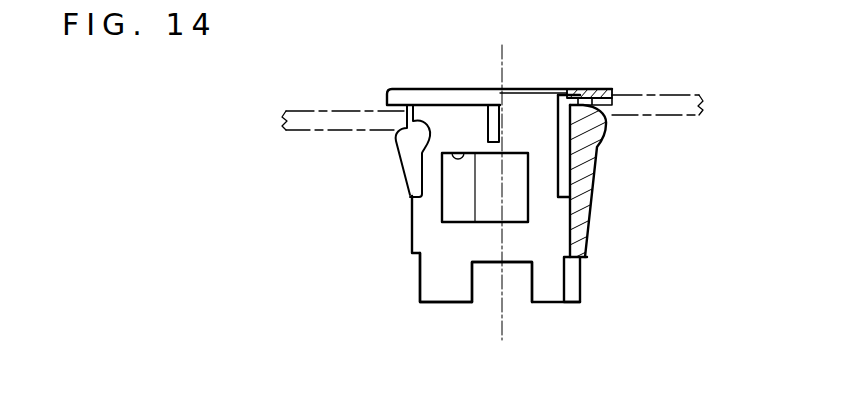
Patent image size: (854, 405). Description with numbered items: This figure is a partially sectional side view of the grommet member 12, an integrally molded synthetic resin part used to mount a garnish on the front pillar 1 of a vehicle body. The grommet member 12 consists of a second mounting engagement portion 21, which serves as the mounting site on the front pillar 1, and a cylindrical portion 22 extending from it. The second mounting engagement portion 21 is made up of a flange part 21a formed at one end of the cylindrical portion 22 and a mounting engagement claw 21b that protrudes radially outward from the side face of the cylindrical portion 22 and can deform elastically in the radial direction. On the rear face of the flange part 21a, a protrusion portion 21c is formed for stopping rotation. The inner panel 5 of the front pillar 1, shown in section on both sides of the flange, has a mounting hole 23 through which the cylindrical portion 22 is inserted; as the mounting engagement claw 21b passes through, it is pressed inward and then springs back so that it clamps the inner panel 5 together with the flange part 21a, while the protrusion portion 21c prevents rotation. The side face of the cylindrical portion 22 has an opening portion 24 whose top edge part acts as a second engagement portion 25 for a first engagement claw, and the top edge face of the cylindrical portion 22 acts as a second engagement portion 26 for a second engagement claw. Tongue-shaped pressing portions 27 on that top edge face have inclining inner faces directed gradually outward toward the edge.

The front pillar 1 is at (305, 118).
The inner panel 5 is at (477, 149).
The grommet member 12 is at (515, 194).
The second mounting engagement portion 21 is at (483, 77).
The flange part 21a is at (394, 90).
The mounting engagement claw 21b is at (396, 138).
The protrusion portion 21c is at (610, 102).
The cylindrical portion 22 is at (427, 211).
The mounting hole 23 is at (408, 156).
The opening portion 24 is at (461, 206).
The second engagement portion 25 is at (458, 151).
The second engagement portion 26 is at (515, 263).
The pressing portion 27 is at (425, 292).